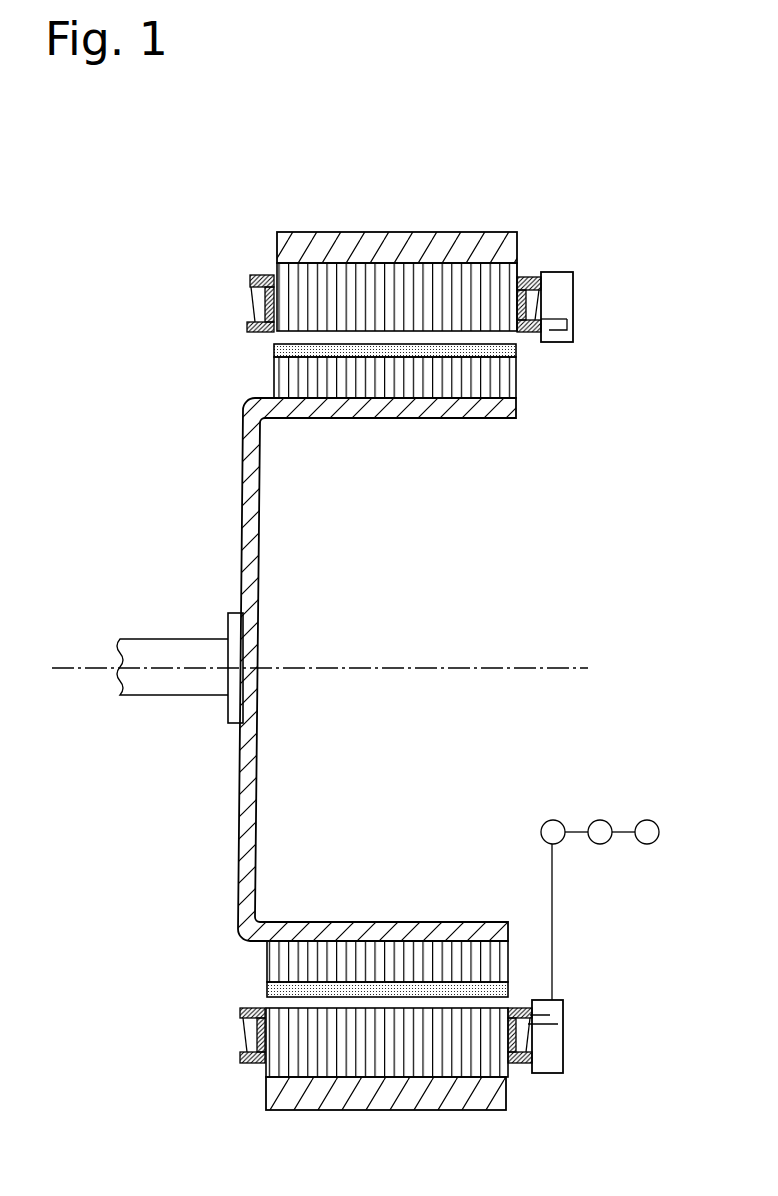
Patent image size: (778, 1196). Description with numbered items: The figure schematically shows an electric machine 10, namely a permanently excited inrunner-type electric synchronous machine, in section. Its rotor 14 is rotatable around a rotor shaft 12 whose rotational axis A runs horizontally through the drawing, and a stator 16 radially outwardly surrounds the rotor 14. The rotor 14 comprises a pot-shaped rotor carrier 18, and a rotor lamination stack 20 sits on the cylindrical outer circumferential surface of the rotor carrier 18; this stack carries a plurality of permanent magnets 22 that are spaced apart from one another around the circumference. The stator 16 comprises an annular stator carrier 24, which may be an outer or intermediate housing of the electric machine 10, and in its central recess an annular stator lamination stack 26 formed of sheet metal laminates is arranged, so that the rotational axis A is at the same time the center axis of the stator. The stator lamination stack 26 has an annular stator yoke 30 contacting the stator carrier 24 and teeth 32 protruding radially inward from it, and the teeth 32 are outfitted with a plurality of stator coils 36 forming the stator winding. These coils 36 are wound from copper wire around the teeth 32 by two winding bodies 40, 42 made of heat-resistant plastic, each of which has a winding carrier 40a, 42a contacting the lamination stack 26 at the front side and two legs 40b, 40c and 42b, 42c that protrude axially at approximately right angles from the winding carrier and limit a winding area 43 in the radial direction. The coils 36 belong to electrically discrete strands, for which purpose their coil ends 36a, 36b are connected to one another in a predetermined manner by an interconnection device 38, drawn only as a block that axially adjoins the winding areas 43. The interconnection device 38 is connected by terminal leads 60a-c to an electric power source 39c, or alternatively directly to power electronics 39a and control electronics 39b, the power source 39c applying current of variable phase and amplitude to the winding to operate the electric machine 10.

The electric machine 10 is at (172, 972).
The rotor shaft 12 is at (155, 638).
The rotor 14 is at (212, 497).
The stator 16 is at (540, 200).
The rotor carrier 18 is at (237, 877).
The rotor lamination stack 20 is at (274, 372).
The permanent magnets 22 is at (274, 348).
The stator carrier 24 is at (470, 235).
The stator lamination stack 26 is at (253, 1073).
The stator yoke 30 is at (517, 268).
The teeth 32 is at (455, 332).
The stator coils 36 is at (522, 1043).
The coil end 36a is at (548, 338).
The coil end 36b is at (565, 340).
The interconnection device 38 is at (621, 355).
The power electronics 39a is at (551, 828).
The control electronics 39b is at (599, 828).
The electric power source 39c is at (648, 828).
The winding body 40 is at (614, 340).
The winding carrier 40a is at (545, 300).
The leg 40b is at (523, 333).
The leg 40c is at (530, 278).
The winding body 42 is at (184, 230).
The winding carrier 42a is at (256, 303).
The leg 42b is at (250, 325).
The leg 42c is at (250, 280).
The winding area 43 is at (248, 1043).
The terminal leads 60a-c is at (553, 892).
The rotational axis A is at (67, 670).